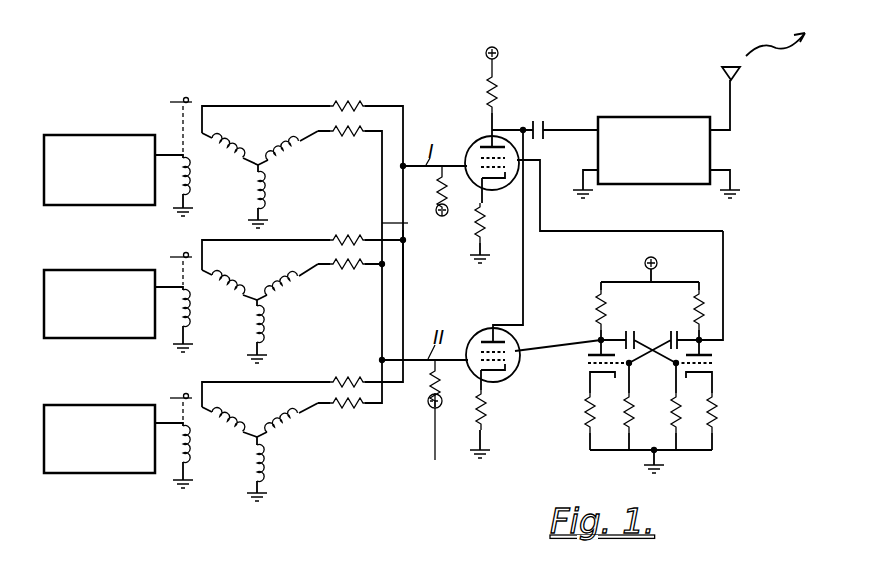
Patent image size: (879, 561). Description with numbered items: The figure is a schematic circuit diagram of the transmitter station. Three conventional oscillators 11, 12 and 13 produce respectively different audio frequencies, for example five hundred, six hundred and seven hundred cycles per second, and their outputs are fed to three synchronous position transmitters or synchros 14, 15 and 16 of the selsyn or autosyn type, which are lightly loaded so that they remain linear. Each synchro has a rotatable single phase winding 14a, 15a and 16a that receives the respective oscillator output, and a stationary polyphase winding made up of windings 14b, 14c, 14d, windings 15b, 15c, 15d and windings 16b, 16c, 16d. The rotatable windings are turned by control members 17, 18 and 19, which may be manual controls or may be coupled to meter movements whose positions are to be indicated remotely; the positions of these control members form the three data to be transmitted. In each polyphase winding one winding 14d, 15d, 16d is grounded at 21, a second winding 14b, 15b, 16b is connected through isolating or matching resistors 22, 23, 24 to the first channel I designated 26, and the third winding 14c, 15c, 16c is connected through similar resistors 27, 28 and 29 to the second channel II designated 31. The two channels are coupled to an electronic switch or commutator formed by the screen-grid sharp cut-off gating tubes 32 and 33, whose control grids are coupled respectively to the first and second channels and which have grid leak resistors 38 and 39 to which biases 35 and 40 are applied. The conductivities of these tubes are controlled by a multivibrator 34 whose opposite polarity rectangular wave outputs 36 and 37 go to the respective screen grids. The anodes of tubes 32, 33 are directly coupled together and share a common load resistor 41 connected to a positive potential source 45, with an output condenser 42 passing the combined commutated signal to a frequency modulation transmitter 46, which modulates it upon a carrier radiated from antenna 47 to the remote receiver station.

The oscillator 11 is at (103, 134).
The oscillator 12 is at (107, 269).
The oscillator 13 is at (95, 404).
The synchronous position transmitter 14 is at (267, 142).
The rotatable single phase winding 14a is at (181, 188).
The stationary polyphase winding 14b is at (233, 145).
The stationary polyphase winding 14c is at (287, 157).
The stationary polyphase winding 14d is at (266, 197).
The synchronous position transmitter 15 is at (262, 301).
The rotatable single phase winding 15a is at (180, 322).
The stationary polyphase winding 15b is at (237, 285).
The stationary polyphase winding 15c is at (283, 292).
The stationary polyphase winding 15d is at (265, 328).
The synchronous position transmitter 16 is at (293, 447).
The rotatable single phase winding 16a is at (180, 458).
The stationary polyphase winding 16b is at (237, 425).
The stationary polyphase winding 16c is at (290, 430).
The stationary polyphase winding 16d is at (263, 467).
The control member 17 is at (186, 99).
The control member 18 is at (186, 254).
The control member 19 is at (178, 393).
The ground 21 is at (263, 219).
The isolating or matching resistor 22 is at (350, 99).
The isolating or matching resistor 23 is at (343, 237).
The isolating or matching resistor 24 is at (342, 375).
The first channel 26 is at (403, 295).
The isolating or matching resistor 27 is at (342, 136).
The isolating or matching resistor 28 is at (355, 270).
The isolating or matching resistor 29 is at (350, 410).
The second channel 31 is at (408, 227).
The gating tube 32 is at (478, 141).
The gating tube 33 is at (508, 376).
The multivibrator 34 is at (651, 365).
The bias 35 is at (442, 217).
The multivibrator output 36 is at (553, 345).
The multivibrator output 37 is at (723, 287).
The grid leak resistor 38 is at (439, 181).
The grid leak resistor 39 is at (438, 375).
The bias 40 is at (441, 439).
The common load resistor 41 is at (497, 94).
The output condenser 42 is at (545, 111).
The positive potential source 45 is at (499, 48).
The frequency modulation transmitter 46 is at (637, 116).
The antenna 47 is at (740, 73).